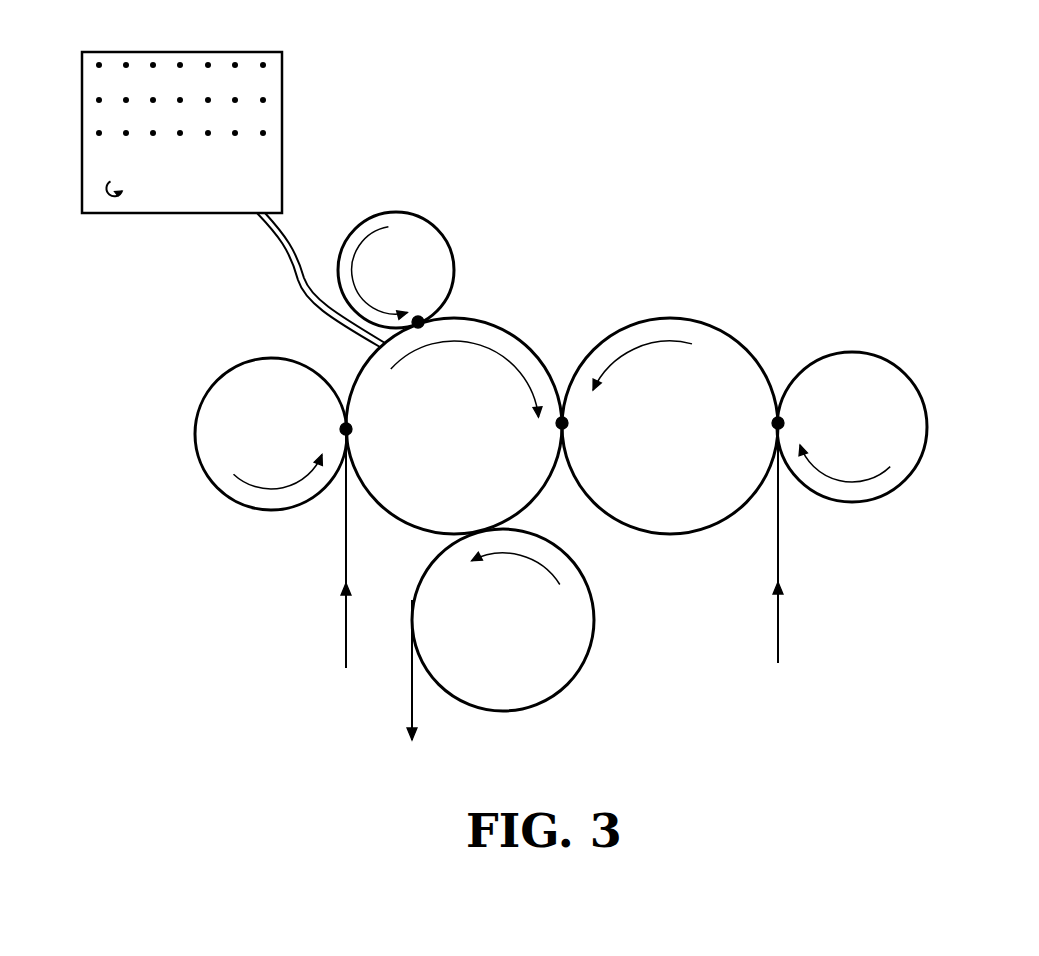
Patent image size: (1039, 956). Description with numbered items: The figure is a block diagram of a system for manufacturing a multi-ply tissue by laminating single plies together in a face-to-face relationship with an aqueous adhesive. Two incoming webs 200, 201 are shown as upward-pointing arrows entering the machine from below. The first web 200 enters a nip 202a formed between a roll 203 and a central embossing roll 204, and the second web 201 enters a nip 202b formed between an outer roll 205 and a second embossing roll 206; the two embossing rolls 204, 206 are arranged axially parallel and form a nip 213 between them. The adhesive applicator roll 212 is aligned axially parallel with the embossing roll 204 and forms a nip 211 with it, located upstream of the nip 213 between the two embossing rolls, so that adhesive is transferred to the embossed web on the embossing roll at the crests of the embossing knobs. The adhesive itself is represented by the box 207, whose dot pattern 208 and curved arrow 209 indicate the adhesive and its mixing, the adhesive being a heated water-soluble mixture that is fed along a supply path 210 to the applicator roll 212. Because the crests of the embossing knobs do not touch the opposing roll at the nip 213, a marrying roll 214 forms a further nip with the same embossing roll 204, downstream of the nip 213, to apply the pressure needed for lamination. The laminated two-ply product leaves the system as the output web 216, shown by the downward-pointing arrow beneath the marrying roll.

The first web 200 is at (345, 560).
The second web 201 is at (778, 545).
The first nip 202a is at (353, 427).
The second nip 202b is at (783, 372).
The first roll 203 is at (213, 428).
The central roll 204 is at (370, 385).
The fourth roll 205 is at (907, 423).
The third roll 206 is at (687, 340).
The adhesive applicator 207 is at (268, 167).
The adhesive pattern dots 208 is at (267, 100).
The adhesive application direction 209 is at (128, 197).
The adhesive supply path 210 is at (270, 227).
The adhesive transfer nip 211 is at (418, 322).
The adhesive applicator roll 212 is at (430, 245).
The bonding nip 213 is at (563, 413).
The exit roll 214 is at (578, 605).
The laminated web output 216 is at (410, 708).